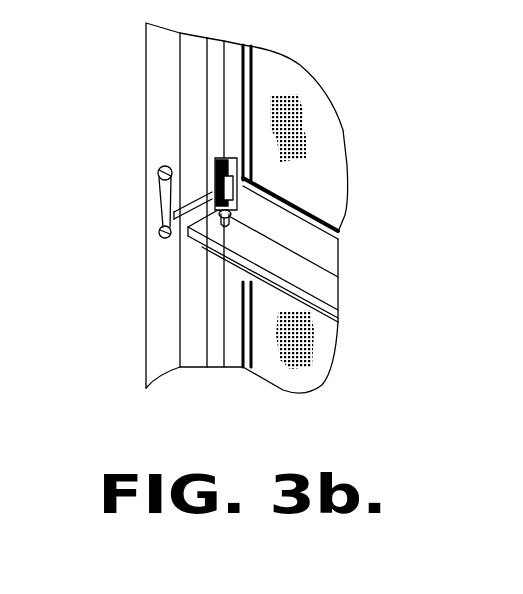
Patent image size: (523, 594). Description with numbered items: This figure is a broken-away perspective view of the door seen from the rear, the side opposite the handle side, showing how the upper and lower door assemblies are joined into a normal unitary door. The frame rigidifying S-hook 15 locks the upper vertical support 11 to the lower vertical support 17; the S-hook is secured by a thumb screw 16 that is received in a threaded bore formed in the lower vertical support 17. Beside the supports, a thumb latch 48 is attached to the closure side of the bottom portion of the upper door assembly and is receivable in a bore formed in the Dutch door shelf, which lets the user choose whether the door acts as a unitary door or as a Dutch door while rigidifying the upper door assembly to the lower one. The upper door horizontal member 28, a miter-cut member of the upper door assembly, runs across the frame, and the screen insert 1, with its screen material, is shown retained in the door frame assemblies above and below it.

The upper vertical support 11 is at (160, 88).
The thumb latch 48 is at (216, 162).
The frame rigidifying S-hook 15 is at (162, 195).
The thumb screw 16 is at (158, 237).
The lower vertical support 17 is at (163, 315).
The screen insert 1 is at (325, 152).
The upper door horizontal member 28 is at (318, 248).